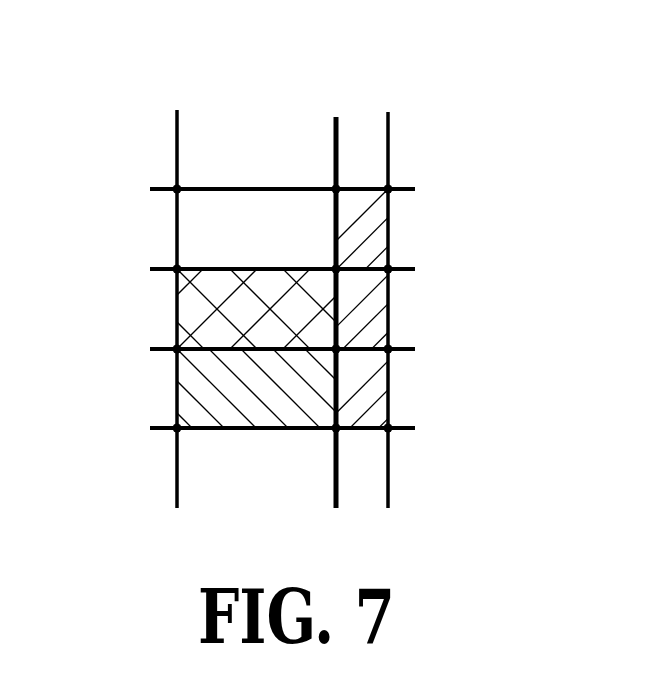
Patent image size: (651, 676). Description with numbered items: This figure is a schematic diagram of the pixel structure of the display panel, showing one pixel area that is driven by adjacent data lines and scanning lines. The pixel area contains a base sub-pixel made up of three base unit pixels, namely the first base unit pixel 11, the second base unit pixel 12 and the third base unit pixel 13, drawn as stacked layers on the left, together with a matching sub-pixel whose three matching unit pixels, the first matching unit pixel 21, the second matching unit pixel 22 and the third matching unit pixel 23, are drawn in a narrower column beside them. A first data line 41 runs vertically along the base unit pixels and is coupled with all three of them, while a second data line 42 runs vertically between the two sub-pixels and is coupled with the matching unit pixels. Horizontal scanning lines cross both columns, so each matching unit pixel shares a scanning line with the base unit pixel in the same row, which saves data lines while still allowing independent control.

The first base unit pixel 11 is at (212, 415).
The second base unit pixel 12 is at (178, 330).
The third base unit pixel 13 is at (195, 228).
The first matching unit pixel 21 is at (390, 428).
The second matching unit pixel 22 is at (390, 327).
The third matching unit pixel 23 is at (390, 228).
The first data line 41 is at (178, 136).
The second data line 42 is at (338, 130).